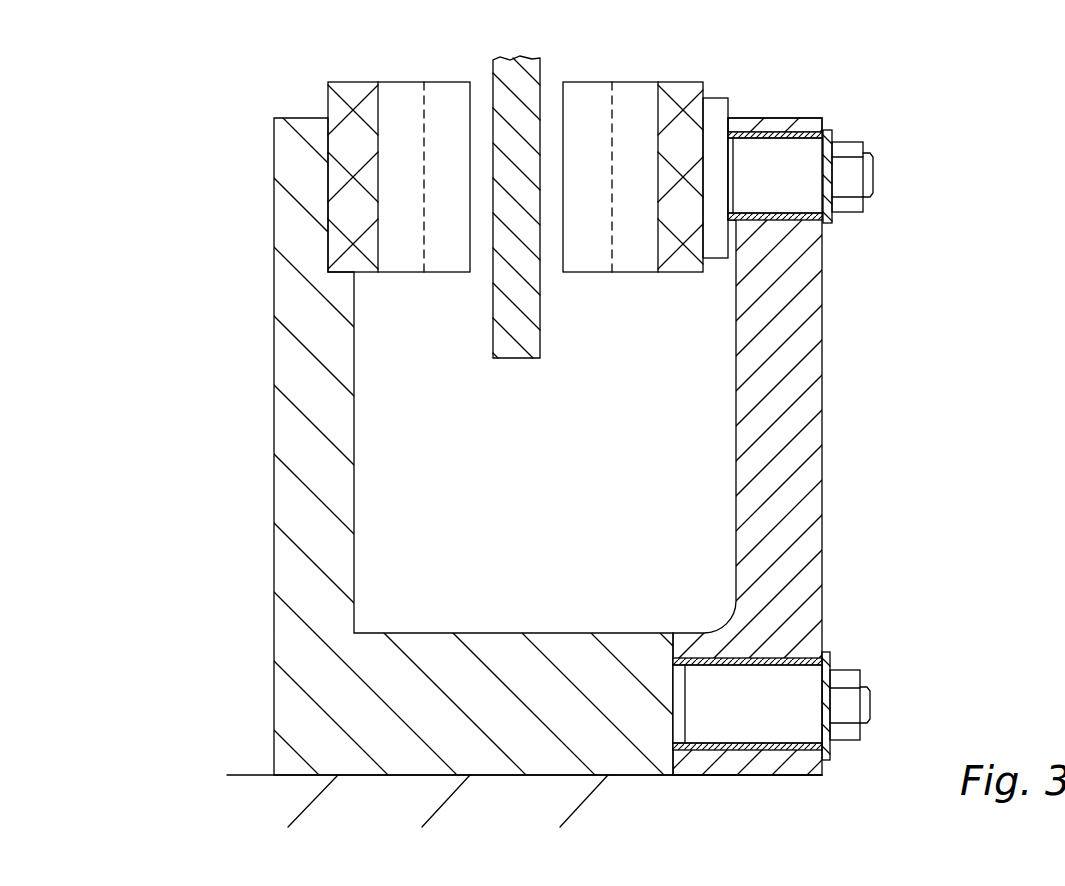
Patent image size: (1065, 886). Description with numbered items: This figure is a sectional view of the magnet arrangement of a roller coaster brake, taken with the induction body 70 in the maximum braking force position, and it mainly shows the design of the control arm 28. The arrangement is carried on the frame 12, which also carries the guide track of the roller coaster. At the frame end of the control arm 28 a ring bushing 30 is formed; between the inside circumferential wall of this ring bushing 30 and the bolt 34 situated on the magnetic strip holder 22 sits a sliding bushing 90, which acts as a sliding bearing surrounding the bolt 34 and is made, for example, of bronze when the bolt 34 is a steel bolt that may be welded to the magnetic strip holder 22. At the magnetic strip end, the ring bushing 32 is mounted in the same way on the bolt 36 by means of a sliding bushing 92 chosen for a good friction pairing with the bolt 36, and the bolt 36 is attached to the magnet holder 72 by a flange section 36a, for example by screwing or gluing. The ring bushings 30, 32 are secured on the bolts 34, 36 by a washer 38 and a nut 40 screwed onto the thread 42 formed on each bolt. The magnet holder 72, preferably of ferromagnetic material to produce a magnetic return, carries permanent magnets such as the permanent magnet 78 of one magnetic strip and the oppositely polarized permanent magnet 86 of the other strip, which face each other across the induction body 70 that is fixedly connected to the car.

The frame 12 is at (490, 845).
The magnetic strip holder 22 is at (285, 368).
The control arm 28 is at (800, 418).
The ring bushing 30 is at (805, 765).
The ring bushing 32 is at (782, 127).
The bolt 34 is at (758, 724).
The bolt 36 is at (783, 192).
The flange section 36a is at (713, 118).
The washer 38 is at (829, 132).
The nut 40 is at (850, 205).
The thread 42 is at (873, 175).
The induction body 70 is at (528, 333).
The magnet holder 72 is at (342, 100).
The permanent magnet 78 is at (646, 122).
The permanent magnet 86 is at (414, 128).
The sliding bushing 90 is at (732, 751).
The sliding bushing 92 is at (757, 133).